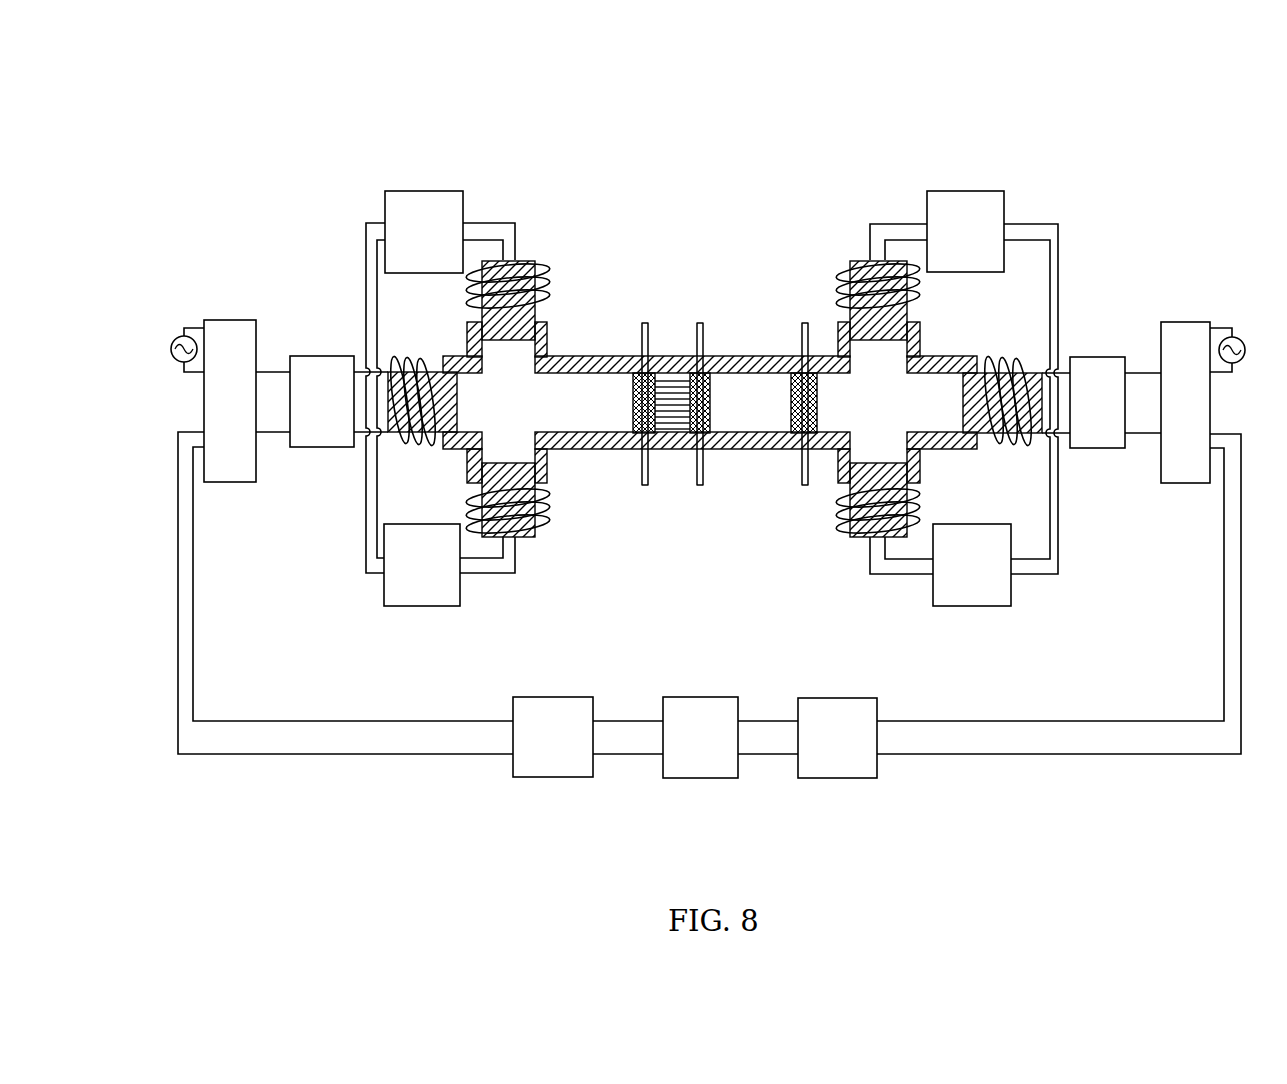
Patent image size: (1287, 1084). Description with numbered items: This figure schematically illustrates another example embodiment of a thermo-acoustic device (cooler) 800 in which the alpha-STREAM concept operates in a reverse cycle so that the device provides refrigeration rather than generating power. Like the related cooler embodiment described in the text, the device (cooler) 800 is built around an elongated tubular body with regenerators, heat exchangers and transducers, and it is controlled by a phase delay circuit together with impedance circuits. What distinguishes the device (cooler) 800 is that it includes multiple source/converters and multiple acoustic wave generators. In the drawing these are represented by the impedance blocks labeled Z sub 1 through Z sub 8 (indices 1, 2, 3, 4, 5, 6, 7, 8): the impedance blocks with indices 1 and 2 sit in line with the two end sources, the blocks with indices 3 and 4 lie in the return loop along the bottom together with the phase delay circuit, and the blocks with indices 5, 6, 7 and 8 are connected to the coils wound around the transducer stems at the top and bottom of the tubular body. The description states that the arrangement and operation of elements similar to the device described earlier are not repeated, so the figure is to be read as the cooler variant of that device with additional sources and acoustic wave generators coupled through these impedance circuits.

The device (cooler) 800 is at (273, 101).
The impedance Z1 1 is at (322, 401).
The impedance Z2 2 is at (1097, 402).
The impedance Z3 3 is at (837, 738).
The impedance Z4 4 is at (553, 737).
The impedance Z5 5 is at (424, 232).
The impedance Z6 6 is at (965, 231).
The impedance Z7 7 is at (422, 565).
The impedance Z8 8 is at (972, 565).